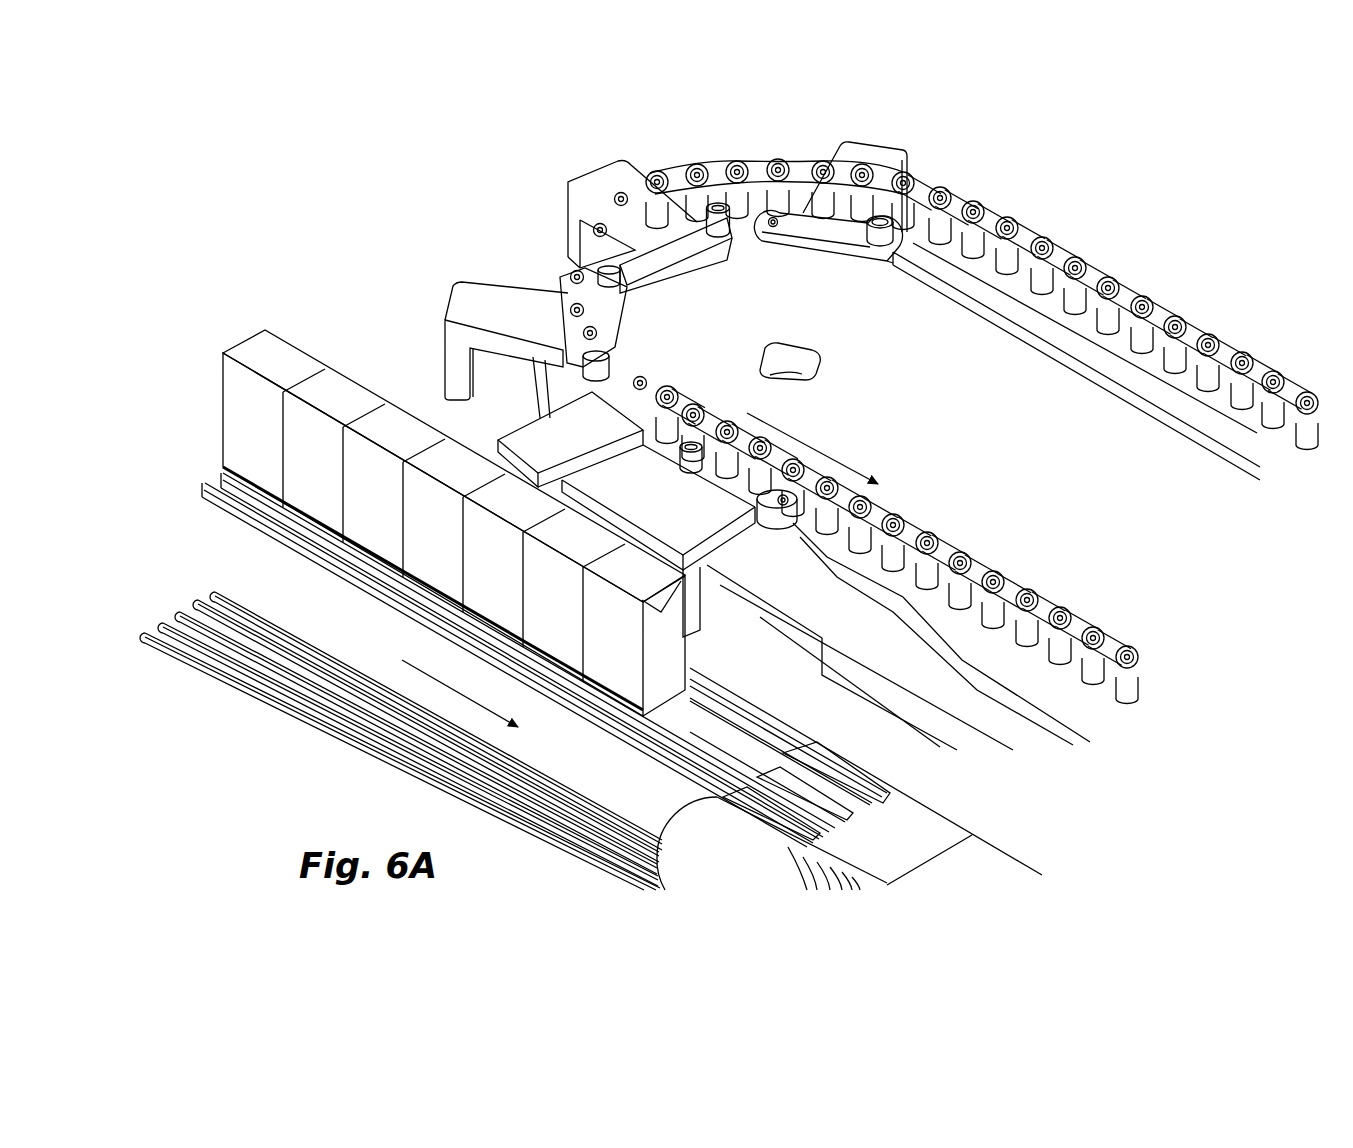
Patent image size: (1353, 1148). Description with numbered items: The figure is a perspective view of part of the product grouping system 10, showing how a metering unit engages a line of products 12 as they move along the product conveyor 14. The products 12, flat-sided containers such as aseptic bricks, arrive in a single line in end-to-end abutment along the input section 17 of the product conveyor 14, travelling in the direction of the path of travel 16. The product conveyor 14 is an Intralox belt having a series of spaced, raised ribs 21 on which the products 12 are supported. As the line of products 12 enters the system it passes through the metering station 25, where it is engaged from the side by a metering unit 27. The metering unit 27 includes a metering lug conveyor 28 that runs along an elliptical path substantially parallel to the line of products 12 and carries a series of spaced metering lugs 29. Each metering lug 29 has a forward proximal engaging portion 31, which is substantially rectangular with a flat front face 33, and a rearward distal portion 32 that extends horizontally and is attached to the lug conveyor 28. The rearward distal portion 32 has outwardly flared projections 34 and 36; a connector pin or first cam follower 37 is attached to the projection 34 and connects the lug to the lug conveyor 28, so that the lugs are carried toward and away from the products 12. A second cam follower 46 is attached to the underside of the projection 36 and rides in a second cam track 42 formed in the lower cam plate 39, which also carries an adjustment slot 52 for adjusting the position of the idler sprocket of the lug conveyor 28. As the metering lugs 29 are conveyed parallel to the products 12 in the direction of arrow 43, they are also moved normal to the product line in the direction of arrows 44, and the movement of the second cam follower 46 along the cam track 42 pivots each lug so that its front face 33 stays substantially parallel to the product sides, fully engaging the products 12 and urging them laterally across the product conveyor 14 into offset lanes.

The product grouping system 10 is at (1200, 132).
The products 12 is at (345, 387).
The product conveyor 14 is at (300, 571).
The path of travel 16 is at (447, 688).
The input section 17 is at (393, 592).
The raised ribs 21 is at (697, 750).
The metering station 25 is at (1210, 276).
The metering unit 27 is at (1162, 389).
The metering lug conveyor 28 is at (1023, 237).
The metering lug 29 is at (552, 186).
The forward proximal engaging portion 31 is at (460, 380).
The rearward distal portion 32 is at (520, 303).
The front face 33 is at (445, 343).
The projection 34 is at (895, 265).
The projection 36 is at (788, 248).
The first cam follower 37 is at (883, 229).
The lower cam plate 39 is at (1008, 453).
The second cam track 42 is at (867, 585).
The arrow 43 is at (822, 452).
The arrows 44 is at (607, 419).
The second cam follower 46 is at (788, 530).
The adjustment slot 52 is at (820, 357).